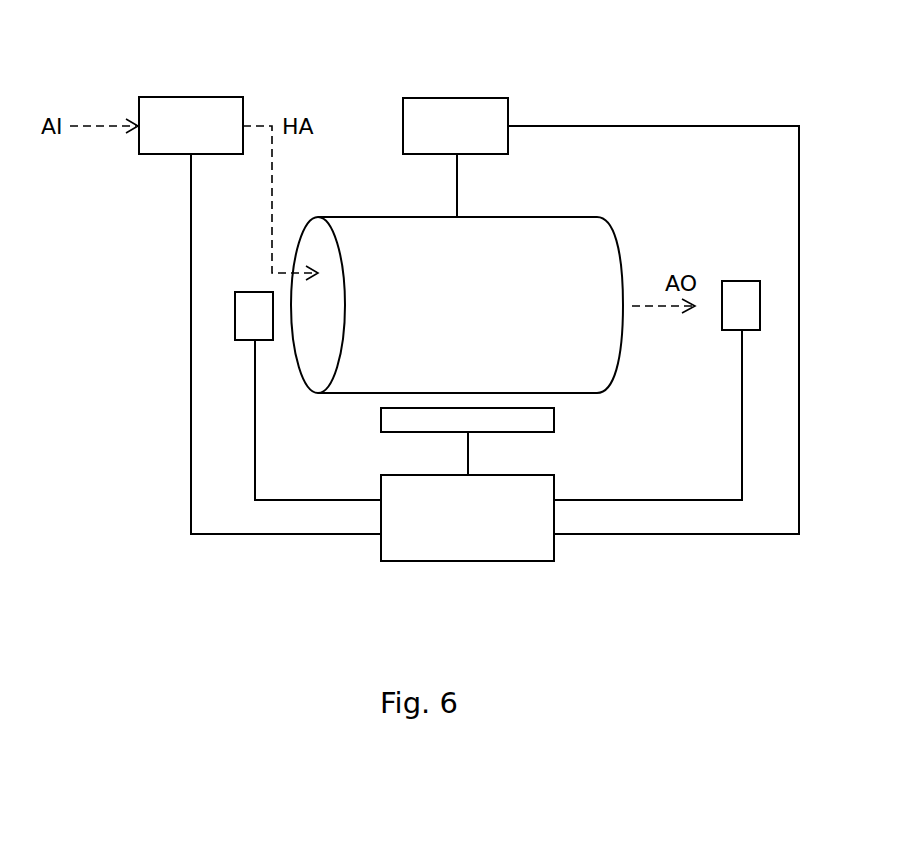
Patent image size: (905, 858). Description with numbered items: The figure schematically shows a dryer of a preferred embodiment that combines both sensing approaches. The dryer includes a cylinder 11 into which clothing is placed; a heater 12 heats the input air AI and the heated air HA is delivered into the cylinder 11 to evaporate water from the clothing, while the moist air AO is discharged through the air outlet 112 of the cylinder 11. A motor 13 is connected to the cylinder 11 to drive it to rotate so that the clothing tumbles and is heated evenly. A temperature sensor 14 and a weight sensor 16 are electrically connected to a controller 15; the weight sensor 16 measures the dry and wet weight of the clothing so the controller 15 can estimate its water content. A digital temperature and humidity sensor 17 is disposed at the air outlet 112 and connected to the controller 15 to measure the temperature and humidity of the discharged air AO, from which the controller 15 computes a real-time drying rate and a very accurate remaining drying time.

The cylinder 11 is at (491, 275).
The air outlet 112 is at (618, 250).
The heater 12 is at (189, 104).
The motor 13 is at (456, 106).
The temperature sensor 14 is at (253, 297).
The controller 15 is at (495, 545).
The weight sensor 16 is at (555, 418).
The digital temperature and humidity sensor 17 is at (742, 292).